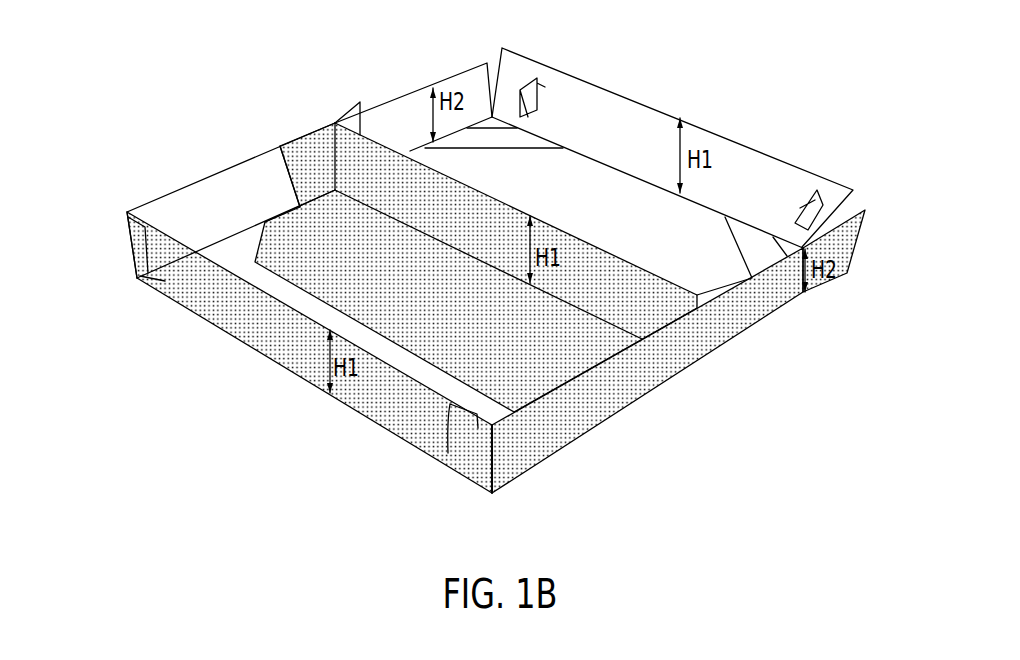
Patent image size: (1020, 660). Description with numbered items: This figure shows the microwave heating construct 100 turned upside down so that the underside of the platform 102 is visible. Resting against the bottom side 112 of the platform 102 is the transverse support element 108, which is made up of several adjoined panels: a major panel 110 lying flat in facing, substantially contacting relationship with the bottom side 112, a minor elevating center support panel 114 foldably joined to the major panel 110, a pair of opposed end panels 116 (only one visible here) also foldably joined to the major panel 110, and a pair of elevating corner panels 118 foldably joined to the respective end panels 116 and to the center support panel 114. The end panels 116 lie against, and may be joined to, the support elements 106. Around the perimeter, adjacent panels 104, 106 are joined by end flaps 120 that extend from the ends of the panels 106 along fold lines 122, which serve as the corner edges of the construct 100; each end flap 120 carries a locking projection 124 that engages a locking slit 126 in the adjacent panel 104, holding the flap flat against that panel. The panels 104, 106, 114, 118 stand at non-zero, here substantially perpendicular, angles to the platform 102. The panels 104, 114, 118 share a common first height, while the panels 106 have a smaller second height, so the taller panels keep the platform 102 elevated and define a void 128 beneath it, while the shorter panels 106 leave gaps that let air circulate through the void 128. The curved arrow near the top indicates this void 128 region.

The microwave heating construct 100 is at (790, 58).
The platform 102 is at (567, 163).
The panel 104 is at (280, 356).
The support element 106 is at (198, 187).
The transverse support element 108 is at (328, 118).
The major panel 110 is at (293, 240).
The bottom side 112 is at (612, 225).
The center support panel 114 is at (500, 200).
The end panel 116 is at (307, 140).
The elevating corner panel 118 is at (358, 106).
The end flap 120 is at (134, 260).
The fold line 122 is at (495, 455).
The locking projection 124 is at (539, 106).
The locking slit 126 is at (812, 191).
The void 128 is at (636, 145).